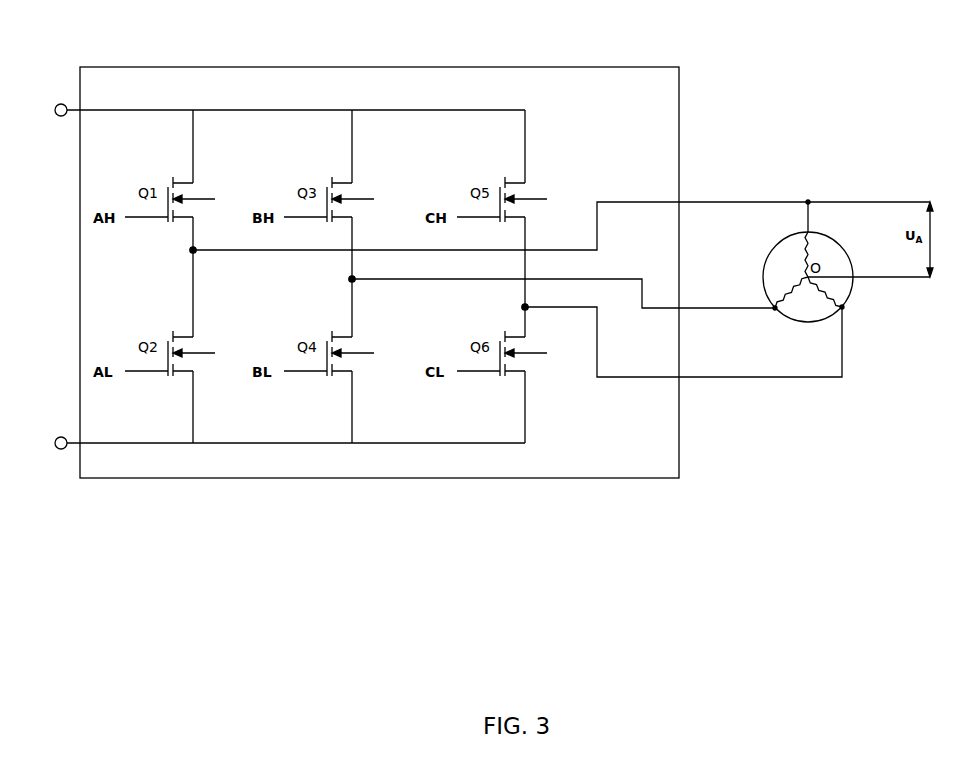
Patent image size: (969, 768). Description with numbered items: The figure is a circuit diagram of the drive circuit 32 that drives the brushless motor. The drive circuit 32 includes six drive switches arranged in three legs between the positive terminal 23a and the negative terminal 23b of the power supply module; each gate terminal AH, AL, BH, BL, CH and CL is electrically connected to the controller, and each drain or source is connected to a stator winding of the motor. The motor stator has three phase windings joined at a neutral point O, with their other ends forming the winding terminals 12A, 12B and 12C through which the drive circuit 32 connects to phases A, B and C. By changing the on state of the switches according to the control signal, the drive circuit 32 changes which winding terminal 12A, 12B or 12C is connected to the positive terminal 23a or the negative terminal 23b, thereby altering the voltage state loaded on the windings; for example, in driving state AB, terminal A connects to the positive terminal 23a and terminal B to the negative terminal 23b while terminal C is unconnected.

The drive circuit 32 is at (603, 88).
The positive terminal 23a is at (271, 113).
The negative terminal 23b is at (271, 446).
The motor phase A winding terminal 12A is at (811, 229).
The motor phase B winding terminal 12B is at (783, 305).
The motor phase C winding terminal 12C is at (841, 297).